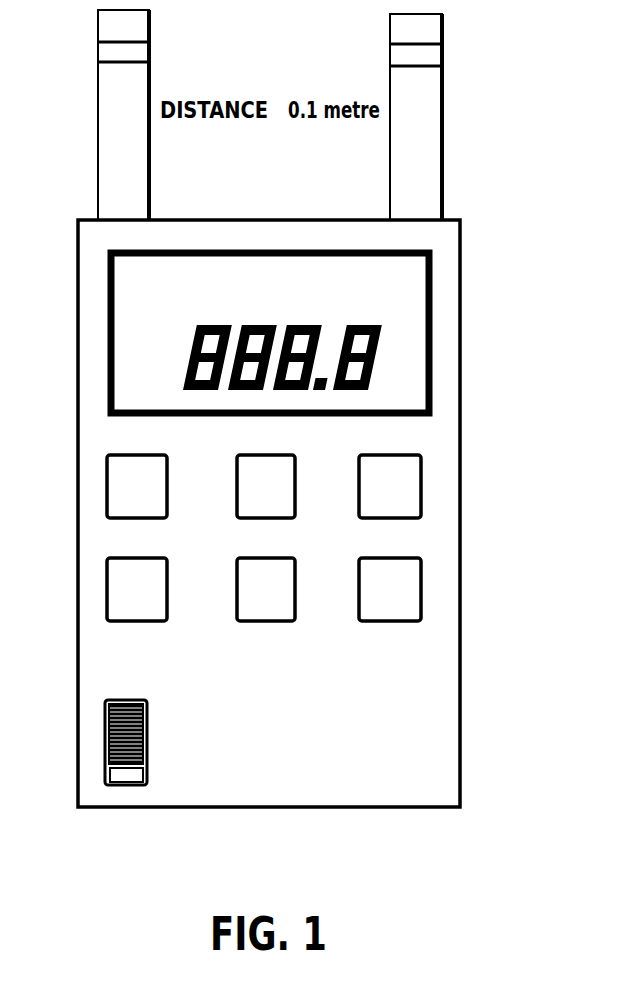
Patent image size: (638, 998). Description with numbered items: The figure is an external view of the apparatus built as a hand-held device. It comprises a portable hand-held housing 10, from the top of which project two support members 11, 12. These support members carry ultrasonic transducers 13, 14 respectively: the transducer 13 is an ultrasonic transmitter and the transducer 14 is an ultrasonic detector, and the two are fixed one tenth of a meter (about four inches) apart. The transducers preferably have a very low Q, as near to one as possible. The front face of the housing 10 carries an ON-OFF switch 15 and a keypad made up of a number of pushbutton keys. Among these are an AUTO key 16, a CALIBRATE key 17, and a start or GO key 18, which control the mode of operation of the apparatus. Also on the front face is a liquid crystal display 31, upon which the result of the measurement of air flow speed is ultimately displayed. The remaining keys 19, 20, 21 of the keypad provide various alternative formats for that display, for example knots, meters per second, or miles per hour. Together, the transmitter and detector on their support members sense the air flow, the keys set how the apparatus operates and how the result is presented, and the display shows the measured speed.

The housing 10 is at (430, 707).
The support member 11 is at (127, 170).
The support member 12 is at (423, 200).
The ultrasonic transducer 13 is at (113, 55).
The ultrasonic transducer 14 is at (430, 58).
The ON-OFF switch 15 is at (102, 742).
The AUTO key 16 is at (115, 483).
The CALIBRATE key 17 is at (288, 467).
The GO key 18 is at (410, 505).
The pushbutton key 19 is at (140, 593).
The pushbutton key 20 is at (270, 593).
The pushbutton key 21 is at (398, 590).
The liquid crystal display 31 is at (415, 310).